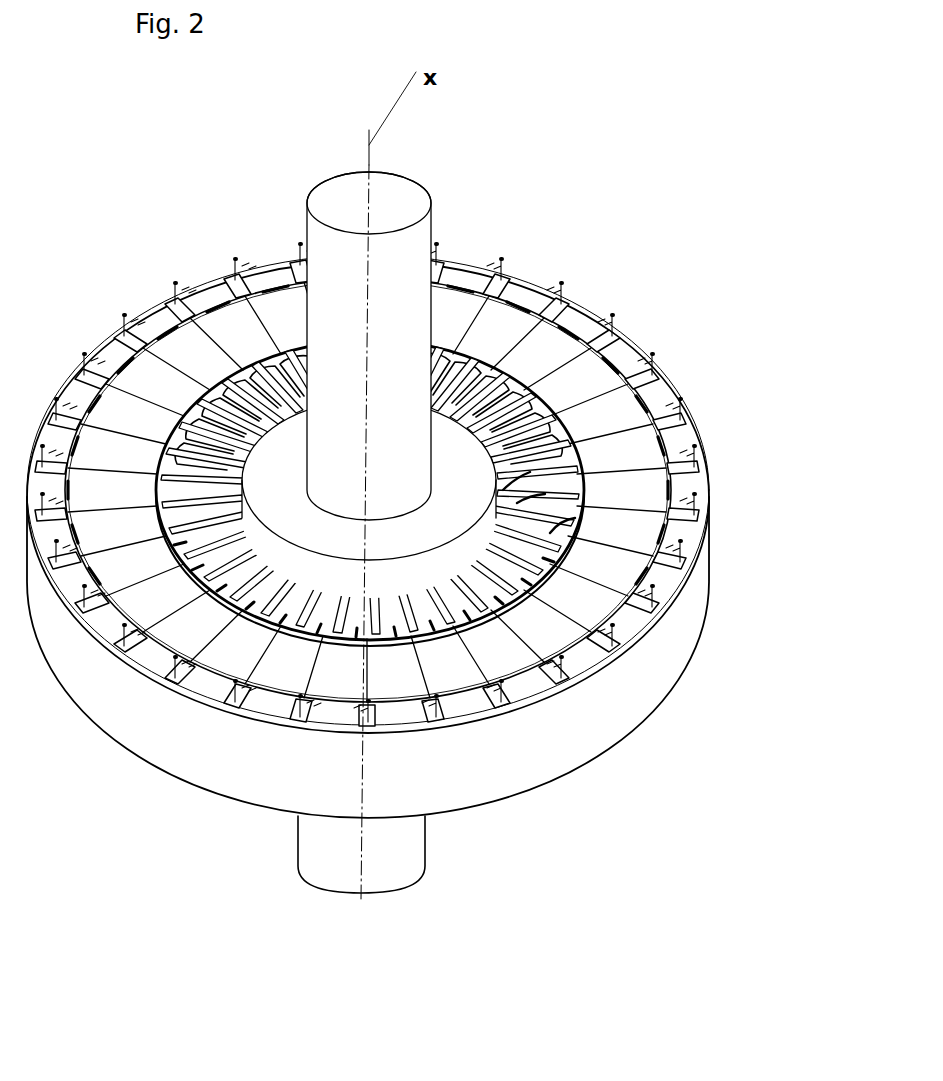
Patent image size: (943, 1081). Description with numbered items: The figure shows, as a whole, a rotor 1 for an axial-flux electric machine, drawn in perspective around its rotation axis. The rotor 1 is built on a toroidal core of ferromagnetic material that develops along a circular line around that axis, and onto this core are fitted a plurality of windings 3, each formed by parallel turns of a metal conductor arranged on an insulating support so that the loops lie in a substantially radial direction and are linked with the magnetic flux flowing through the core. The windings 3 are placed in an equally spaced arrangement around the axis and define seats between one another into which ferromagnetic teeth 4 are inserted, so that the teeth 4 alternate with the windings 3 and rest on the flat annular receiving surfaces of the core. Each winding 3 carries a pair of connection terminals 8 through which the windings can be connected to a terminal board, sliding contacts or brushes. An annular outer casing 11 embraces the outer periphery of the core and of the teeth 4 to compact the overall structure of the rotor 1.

The rotor 1 is at (573, 167).
The windings 3 is at (443, 363).
The teeth 4 is at (263, 370).
The connection terminals 8 is at (550, 533).
The outer casing 11 is at (610, 697).